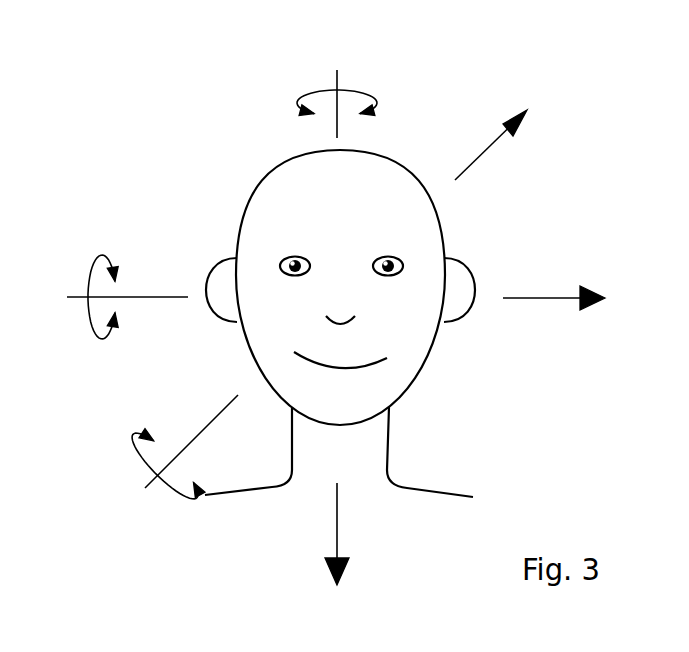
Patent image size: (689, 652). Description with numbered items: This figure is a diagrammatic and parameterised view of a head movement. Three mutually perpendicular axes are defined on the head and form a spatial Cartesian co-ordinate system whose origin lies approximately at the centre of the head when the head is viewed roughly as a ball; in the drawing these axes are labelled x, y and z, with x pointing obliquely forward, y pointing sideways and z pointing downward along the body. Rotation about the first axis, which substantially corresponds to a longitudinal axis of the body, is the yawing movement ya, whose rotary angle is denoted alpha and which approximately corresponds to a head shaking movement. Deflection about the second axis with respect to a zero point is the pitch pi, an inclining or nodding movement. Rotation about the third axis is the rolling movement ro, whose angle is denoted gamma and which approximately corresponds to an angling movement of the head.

The x axis (forward direction) x is at (501, 145).
The y axis (lateral direction) y is at (554, 315).
The z axis (vertical direction) z is at (350, 536).
The yawing movement ya is at (337, 83).
The pitch pi is at (113, 289).
The rolling movement ro is at (172, 450).